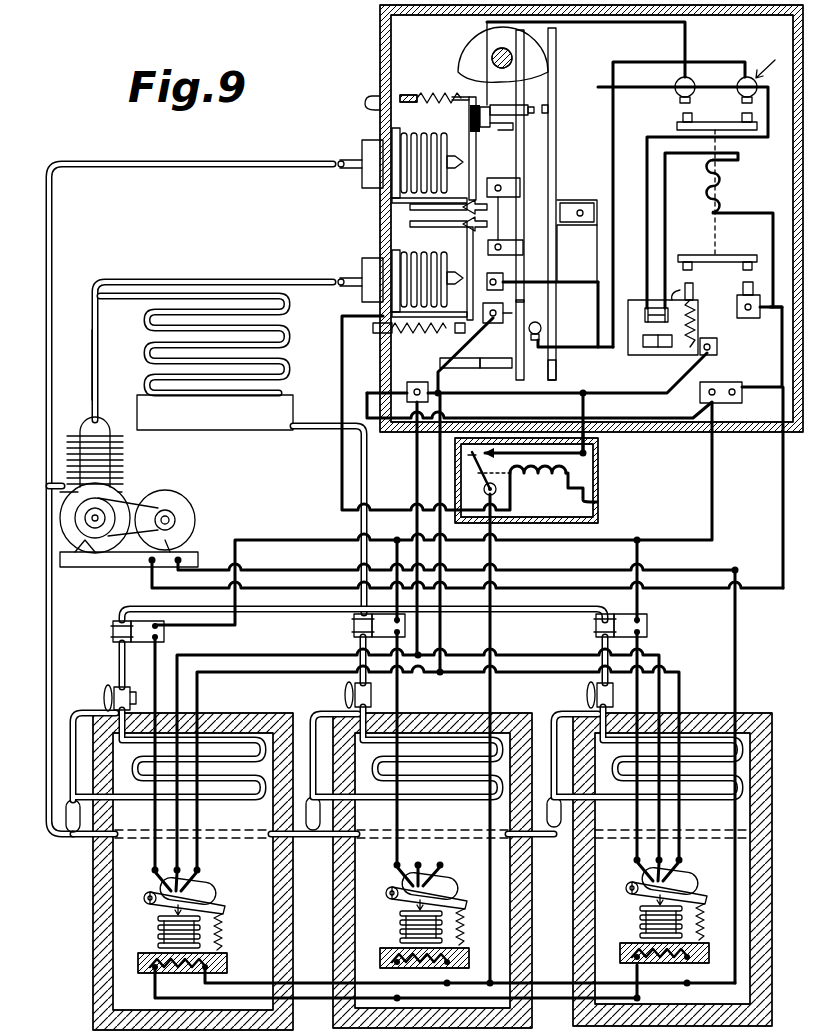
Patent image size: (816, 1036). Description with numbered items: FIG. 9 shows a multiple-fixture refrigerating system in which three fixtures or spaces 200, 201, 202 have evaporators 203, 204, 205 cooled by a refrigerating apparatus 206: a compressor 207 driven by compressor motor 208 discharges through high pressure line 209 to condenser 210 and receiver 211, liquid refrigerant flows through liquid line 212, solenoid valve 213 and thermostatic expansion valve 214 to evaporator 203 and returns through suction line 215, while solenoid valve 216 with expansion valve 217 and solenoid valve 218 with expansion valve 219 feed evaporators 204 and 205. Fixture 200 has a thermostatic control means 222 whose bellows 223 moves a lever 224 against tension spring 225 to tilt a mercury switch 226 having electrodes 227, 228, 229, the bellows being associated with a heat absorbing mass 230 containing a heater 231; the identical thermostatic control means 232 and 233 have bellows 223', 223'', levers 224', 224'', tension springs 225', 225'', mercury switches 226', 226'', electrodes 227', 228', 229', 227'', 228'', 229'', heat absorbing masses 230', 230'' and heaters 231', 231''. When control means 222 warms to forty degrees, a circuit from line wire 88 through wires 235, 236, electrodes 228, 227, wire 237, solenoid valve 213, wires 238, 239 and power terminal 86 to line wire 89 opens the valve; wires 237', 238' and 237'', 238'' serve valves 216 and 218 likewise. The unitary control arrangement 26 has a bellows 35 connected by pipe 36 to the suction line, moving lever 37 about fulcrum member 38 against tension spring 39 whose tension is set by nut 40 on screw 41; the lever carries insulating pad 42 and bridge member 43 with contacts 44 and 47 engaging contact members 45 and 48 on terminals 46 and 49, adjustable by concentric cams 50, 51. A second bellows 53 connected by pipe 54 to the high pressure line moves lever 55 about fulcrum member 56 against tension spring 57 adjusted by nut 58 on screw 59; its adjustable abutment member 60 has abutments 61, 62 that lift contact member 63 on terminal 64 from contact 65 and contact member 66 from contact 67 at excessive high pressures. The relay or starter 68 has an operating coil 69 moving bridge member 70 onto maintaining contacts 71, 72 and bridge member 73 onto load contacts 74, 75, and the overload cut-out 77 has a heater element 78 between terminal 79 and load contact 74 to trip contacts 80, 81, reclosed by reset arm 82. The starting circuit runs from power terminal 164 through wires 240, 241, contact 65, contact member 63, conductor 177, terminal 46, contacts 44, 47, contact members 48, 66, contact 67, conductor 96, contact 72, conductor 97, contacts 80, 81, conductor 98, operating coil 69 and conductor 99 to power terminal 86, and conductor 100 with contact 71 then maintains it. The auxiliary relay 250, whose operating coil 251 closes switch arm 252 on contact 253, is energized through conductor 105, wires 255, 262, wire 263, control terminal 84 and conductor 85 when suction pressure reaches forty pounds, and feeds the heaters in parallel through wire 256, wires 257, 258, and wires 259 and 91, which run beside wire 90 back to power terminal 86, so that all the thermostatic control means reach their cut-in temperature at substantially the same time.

The control housing 26 is at (344, 53).
The bellows 35 is at (418, 138).
The suction pressure pipe 36 is at (350, 160).
The lever bar 37 is at (466, 140).
The plate 38 is at (418, 214).
The spring 39 is at (440, 92).
The adjusting screw 40 is at (410, 94).
The bracket 41 is at (367, 102).
The contact block 42 is at (472, 103).
The contact 43 is at (488, 128).
The bracket 44 is at (506, 132).
The bar 45 is at (525, 144).
The terminal 46 is at (504, 192).
The terminal 47 is at (506, 104).
The bar 48 is at (557, 101).
The terminal 49 is at (568, 196).
The cam 50 is at (478, 60).
The hub 51 is at (545, 56).
The bellows 53 is at (418, 256).
The pressure pipe 54 is at (176, 282).
The bar 55 is at (467, 246).
The linkage arrows 56 is at (440, 220).
The stop 57 is at (455, 330).
The spring 58 is at (410, 334).
The bracket 59 is at (374, 333).
The bracket 60 is at (466, 368).
The bracket 61 is at (502, 368).
The bar end 62 is at (548, 376).
The bar 63 is at (516, 350).
The terminal 64 is at (518, 246).
The contact 65 is at (500, 324).
The frame 66 is at (558, 309).
The contact 67 is at (535, 322).
The indicator circuit 68 is at (711, 92).
The coil 69 is at (722, 191).
The bar 70 is at (714, 124).
The lamp 71 is at (677, 84).
The lamp 72 is at (738, 84).
The bar 73 is at (703, 256).
The contact 74 is at (694, 287).
The contact 75 is at (743, 300).
The relay 77 is at (621, 375).
The resistor 78 is at (698, 323).
The contact 79 is at (717, 350).
The relay coil 80 is at (645, 306).
The armature 81 is at (676, 286).
The block 82 is at (664, 347).
The terminal 84 is at (495, 274).
The conductor 85 is at (597, 255).
The terminal block 86 is at (720, 384).
The wire 88 is at (367, 393).
The wire 89 is at (367, 418).
The wire 90 is at (783, 476).
The wire 91 is at (740, 527).
The wire 96 is at (632, 62).
The wire 97 is at (647, 145).
The wire 98 is at (667, 182).
The wire 99 is at (766, 236).
The wire 100 is at (595, 24).
The wire 105 is at (494, 400).
The terminal 164 is at (422, 384).
The conductor 177 is at (500, 224).
The refrigerated cabinet 200 is at (93, 880).
The refrigerated cabinet 201 is at (340, 874).
The refrigerated cabinet 202 is at (580, 872).
The evaporator 203 is at (225, 800).
The evaporator 204 is at (462, 800).
The evaporator 205 is at (702, 800).
The compressor unit 206 is at (210, 479).
The accumulator 207 is at (98, 426).
The motor 208 is at (162, 490).
The pipe 209 is at (92, 355).
The condenser 210 is at (280, 328).
The receiver 211 is at (222, 422).
The liquid line 212 is at (366, 485).
The solenoid valve 213 is at (113, 633).
The expansion valve 214 is at (112, 690).
The suction line 215 is at (49, 486).
The solenoid valve 216 is at (354, 630).
The expansion valve 217 is at (347, 692).
The solenoid valve 218 is at (596, 628).
The expansion valve 219 is at (593, 692).
The thermostat 222 is at (227, 885).
The bellows 223 is at (159, 932).
The lever 224 is at (205, 905).
The spring 225 is at (238, 932).
The contact arm 226 is at (207, 891).
The contact 227 is at (140, 874).
The contact 228 is at (149, 865).
The contact 229 is at (210, 868).
The heater block 230 is at (201, 961).
The heater 231 is at (179, 977).
The thermostat 232 is at (438, 883).
The thermostat 233 is at (680, 878).
The wire 235 is at (415, 464).
The wire 236 is at (248, 656).
The wire 237 is at (138, 753).
The solenoid terminal 238 is at (169, 636).
The wire 239 is at (683, 536).
The wire 240 is at (200, 694).
The wire 241 is at (444, 627).
The switch box 250 is at (633, 477).
The coil 251 is at (530, 486).
The switch 252 is at (486, 474).
The arrow indicator 253 is at (535, 449).
The wire 255 is at (588, 402).
The wire 256 is at (598, 447).
The wire 257 is at (494, 624).
The wire 258 is at (462, 986).
The wire 259 is at (738, 630).
The wire 262 is at (600, 501).
The wire 263 is at (342, 497).
The bellows 223' is at (400, 927).
The lever 224' is at (448, 900).
The spring 225' is at (480, 927).
The contact arm 226' is at (450, 886).
The contact 227' is at (381, 869).
The contact 228' is at (390, 860).
The contact 229' is at (452, 863).
The heater block 230' is at (443, 956).
The heater 231' is at (421, 972).
The wire 237' is at (379, 748).
The wire 238' is at (383, 588).
The bellows 223'' is at (638, 922).
The lever 224'' is at (689, 895).
The spring 225'' is at (722, 922).
The contact arm 226'' is at (691, 881).
The contact 227'' is at (620, 864).
The contact 228'' is at (628, 855).
The contact 229'' is at (693, 858).
The heater block 230'' is at (685, 951).
The heater 231'' is at (661, 967).
The wire 237'' is at (621, 746).
The wire 238'' is at (650, 588).